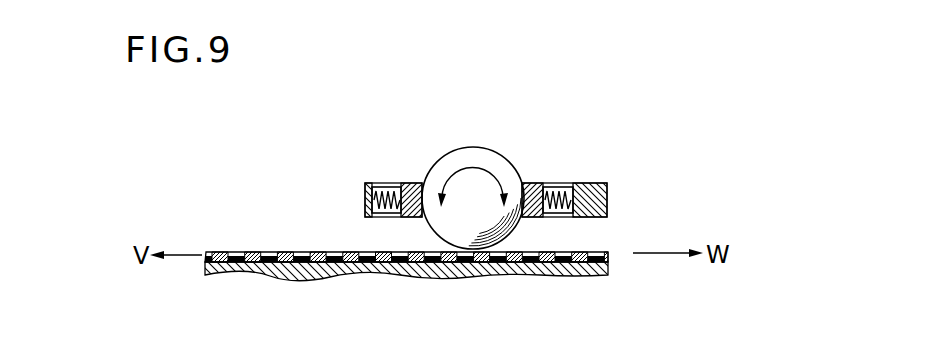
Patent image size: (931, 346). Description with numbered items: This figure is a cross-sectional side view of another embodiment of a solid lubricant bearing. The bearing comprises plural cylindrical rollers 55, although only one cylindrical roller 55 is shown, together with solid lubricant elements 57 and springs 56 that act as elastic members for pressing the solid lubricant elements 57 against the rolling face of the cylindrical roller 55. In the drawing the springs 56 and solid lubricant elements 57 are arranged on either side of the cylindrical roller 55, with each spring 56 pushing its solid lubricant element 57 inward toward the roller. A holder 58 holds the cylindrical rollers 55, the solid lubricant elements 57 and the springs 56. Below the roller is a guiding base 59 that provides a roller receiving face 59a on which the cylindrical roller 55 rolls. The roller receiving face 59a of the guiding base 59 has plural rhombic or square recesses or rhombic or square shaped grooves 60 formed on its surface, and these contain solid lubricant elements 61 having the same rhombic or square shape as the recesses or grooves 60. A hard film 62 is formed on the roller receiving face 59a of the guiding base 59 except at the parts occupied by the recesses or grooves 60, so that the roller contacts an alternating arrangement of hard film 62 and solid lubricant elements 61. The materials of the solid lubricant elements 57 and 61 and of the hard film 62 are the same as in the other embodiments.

The cylindrical roller 55 is at (473, 166).
The spring 56 is at (373, 184).
The solid lubricant element 57 is at (408, 183).
The holder 58 is at (598, 183).
The guiding base 59 is at (397, 248).
The roller receiving face 59a is at (397, 209).
The rhombic or square recess or groove 60 is at (315, 276).
The solid lubricant element 61 is at (317, 252).
The hard film 62 is at (297, 252).